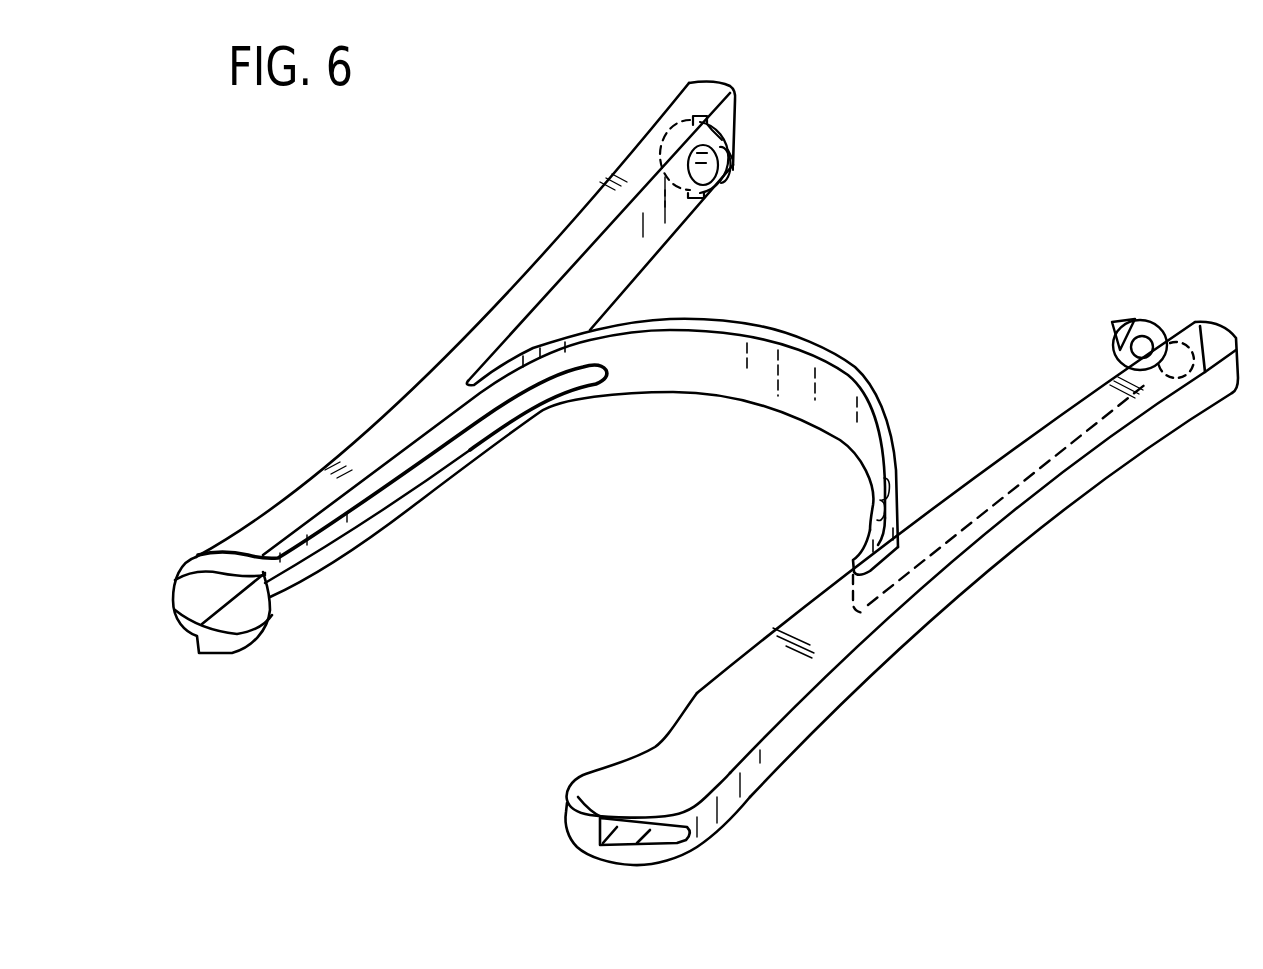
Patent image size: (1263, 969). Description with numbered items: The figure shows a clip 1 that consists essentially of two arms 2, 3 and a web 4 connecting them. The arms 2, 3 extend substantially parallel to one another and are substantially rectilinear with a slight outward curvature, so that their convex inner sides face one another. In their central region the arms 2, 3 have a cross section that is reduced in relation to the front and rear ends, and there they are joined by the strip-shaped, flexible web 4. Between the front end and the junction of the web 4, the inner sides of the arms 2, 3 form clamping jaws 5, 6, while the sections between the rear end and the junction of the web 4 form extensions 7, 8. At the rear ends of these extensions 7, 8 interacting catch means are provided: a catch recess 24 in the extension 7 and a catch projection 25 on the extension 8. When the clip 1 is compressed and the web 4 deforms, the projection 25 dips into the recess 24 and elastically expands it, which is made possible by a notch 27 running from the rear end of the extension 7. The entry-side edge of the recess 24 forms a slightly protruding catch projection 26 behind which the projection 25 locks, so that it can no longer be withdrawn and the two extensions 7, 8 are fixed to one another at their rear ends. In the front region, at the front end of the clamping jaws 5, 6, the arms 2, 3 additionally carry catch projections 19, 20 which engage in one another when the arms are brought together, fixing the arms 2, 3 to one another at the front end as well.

The clip 1 is at (1003, 648).
The arm 2 is at (307, 470).
The arm 3 is at (858, 710).
The web 4 is at (868, 358).
The clamping jaw 5 is at (413, 500).
The clamping jaw 6 is at (703, 693).
The extension 7 is at (603, 183).
The extension 8 is at (1077, 457).
The catch projection 19 is at (240, 637).
The catch projection 20 is at (565, 808).
The catch recess 24 is at (688, 137).
The catch projection 25 is at (1110, 333).
The catch projection 26 is at (717, 140).
The notch 27 is at (708, 195).